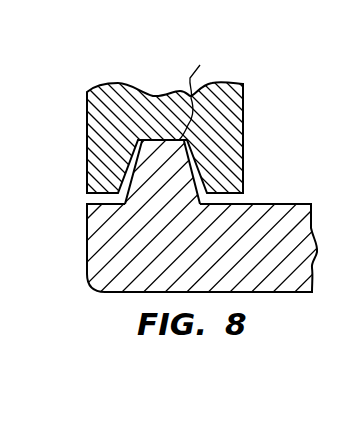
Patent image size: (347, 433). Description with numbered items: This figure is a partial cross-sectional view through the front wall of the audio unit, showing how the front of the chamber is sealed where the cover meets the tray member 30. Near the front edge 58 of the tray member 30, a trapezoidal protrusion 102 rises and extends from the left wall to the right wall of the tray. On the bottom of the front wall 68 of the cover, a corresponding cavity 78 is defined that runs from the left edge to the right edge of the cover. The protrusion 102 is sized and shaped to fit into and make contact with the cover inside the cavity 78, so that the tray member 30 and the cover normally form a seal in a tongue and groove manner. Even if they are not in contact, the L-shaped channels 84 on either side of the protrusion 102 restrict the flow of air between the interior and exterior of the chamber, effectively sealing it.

The tray member 30 is at (113, 292).
The front edge 58 is at (87, 255).
The front wall 68 is at (160, 102).
The cavity 78 is at (205, 90).
The L-shaped channels 84 is at (123, 173).
The protrusion 102 is at (173, 186).